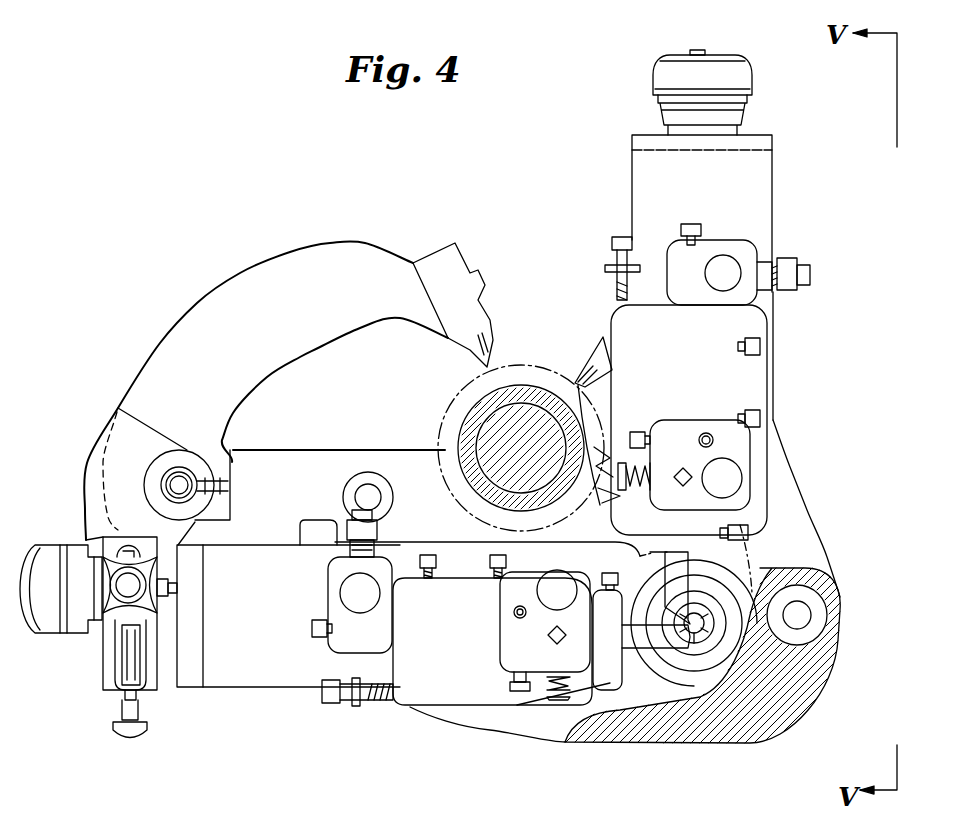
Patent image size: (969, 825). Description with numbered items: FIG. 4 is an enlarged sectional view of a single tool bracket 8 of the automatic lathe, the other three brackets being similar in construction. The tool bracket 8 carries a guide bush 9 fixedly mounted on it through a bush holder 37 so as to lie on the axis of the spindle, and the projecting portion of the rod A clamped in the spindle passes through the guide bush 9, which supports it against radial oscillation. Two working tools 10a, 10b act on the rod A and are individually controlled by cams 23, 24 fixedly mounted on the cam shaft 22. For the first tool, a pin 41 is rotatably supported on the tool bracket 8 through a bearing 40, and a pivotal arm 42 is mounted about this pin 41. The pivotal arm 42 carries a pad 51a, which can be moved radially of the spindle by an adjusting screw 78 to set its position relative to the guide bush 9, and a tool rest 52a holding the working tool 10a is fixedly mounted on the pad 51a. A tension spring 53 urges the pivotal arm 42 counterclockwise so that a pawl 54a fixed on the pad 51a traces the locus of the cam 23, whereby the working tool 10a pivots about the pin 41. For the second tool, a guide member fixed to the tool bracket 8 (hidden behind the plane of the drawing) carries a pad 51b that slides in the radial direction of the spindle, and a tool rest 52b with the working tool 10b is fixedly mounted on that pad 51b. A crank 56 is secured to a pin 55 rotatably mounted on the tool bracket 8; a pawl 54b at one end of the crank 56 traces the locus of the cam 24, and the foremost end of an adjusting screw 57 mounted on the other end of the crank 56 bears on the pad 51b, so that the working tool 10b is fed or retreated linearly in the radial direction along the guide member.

The tool bracket 8 is at (790, 673).
The guide bush 9 is at (708, 642).
The working tool 10a is at (677, 573).
The working tool 10b is at (655, 645).
The cam shaft 22 is at (490, 453).
The cam 23 is at (452, 412).
The cam 24 is at (521, 448).
The bush holder 37 is at (720, 640).
The bearing 40 is at (803, 600).
The pin 41 is at (797, 615).
The pivotal arm 42 is at (800, 517).
The pad 51a is at (762, 208).
The pad 51b is at (247, 688).
The tool rest 52a is at (722, 380).
The tool rest 52b is at (450, 708).
The tension spring 53 is at (615, 490).
The pawl 54a is at (603, 353).
The pawl 54b is at (483, 345).
The pin 55 is at (180, 478).
The crank 56 is at (197, 322).
The adjusting screw 57 is at (47, 623).
The adjusting screw 78 is at (745, 80).
The rod A is at (693, 645).